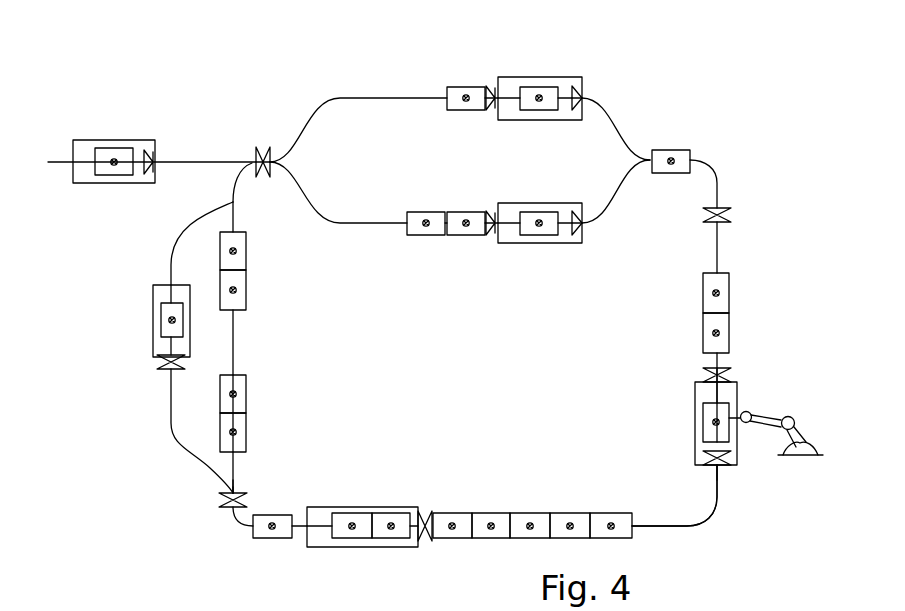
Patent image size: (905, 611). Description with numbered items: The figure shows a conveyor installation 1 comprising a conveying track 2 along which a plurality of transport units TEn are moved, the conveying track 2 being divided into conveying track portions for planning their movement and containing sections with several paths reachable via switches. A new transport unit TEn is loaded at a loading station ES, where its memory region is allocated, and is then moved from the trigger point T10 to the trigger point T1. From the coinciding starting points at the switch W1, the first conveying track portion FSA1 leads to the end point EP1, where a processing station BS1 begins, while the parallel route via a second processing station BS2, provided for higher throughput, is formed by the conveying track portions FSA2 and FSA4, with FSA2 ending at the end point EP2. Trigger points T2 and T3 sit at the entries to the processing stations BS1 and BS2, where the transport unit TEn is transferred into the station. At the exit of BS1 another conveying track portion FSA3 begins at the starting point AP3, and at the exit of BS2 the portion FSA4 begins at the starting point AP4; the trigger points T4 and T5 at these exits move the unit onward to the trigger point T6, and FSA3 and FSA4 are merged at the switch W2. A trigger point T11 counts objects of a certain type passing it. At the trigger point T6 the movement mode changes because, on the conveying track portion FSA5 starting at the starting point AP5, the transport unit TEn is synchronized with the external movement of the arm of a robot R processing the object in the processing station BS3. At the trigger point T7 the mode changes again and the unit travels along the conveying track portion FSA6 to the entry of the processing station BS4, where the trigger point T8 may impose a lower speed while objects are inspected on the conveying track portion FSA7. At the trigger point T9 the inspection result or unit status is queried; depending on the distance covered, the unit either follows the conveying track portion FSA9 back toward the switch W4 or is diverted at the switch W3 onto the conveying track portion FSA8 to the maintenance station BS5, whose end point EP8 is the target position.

The conveyor installation 1 is at (745, 110).
The conveying track 2 is at (720, 187).
The loading station ES is at (93, 140).
The trigger point T1 is at (268, 178).
The trigger point T2 is at (497, 112).
The trigger point T3 is at (495, 238).
The trigger point T4 is at (587, 112).
The trigger point T5 is at (584, 215).
The trigger point T6 is at (723, 372).
The trigger point T7 is at (712, 466).
The trigger point T8 is at (425, 510).
The trigger point T9 is at (236, 495).
The trigger point T10 is at (156, 178).
The trigger point T11 is at (727, 221).
The switch W1 is at (250, 150).
The switch W2 is at (650, 148).
The switch W3 is at (227, 492).
The switch W4 is at (238, 205).
The first conveying track portion FSA1 is at (366, 93).
The conveying track portion FSA2 is at (362, 228).
The conveying track portion FSA3 is at (626, 120).
The conveying track portion FSA4 is at (626, 193).
The conveying track portion FSA5 is at (714, 395).
The conveying track portion FSA6 is at (690, 528).
The conveying track portion FSA7 is at (238, 517).
The conveying track portion FSA8 is at (168, 390).
The conveying track portion FSA9 is at (237, 340).
The processing station BS1 is at (531, 77).
The second processing station BS2 is at (547, 246).
The processing station BS3 is at (695, 440).
The processing station BS4 is at (343, 548).
The maintenance station BS5 is at (153, 310).
The end point EP1 is at (473, 78).
The end point EP2 is at (457, 205).
The end point EP8 is at (149, 358).
The starting point AP3 is at (583, 95).
The starting point AP4 is at (578, 234).
The starting point AP5 is at (747, 374).
The transport unit TEn is at (247, 395).
The robot R is at (791, 416).